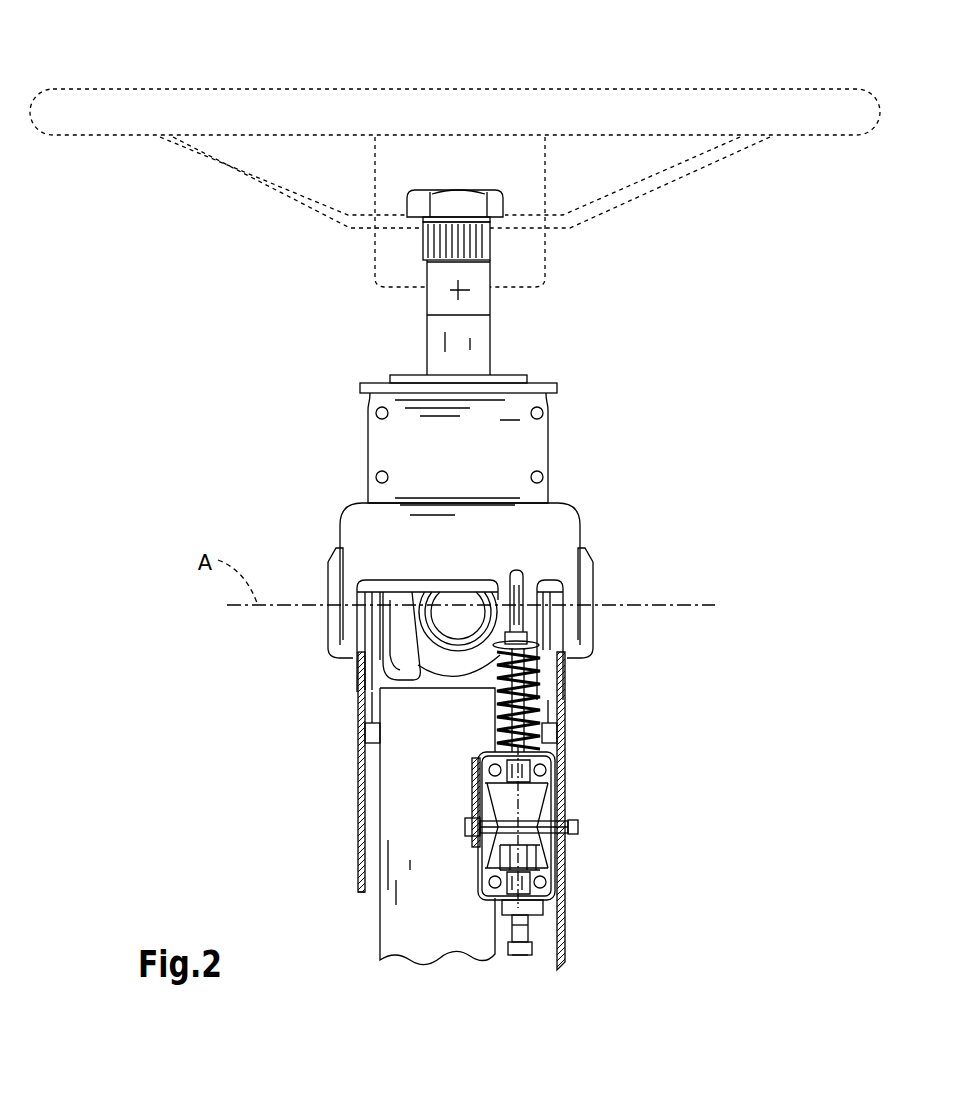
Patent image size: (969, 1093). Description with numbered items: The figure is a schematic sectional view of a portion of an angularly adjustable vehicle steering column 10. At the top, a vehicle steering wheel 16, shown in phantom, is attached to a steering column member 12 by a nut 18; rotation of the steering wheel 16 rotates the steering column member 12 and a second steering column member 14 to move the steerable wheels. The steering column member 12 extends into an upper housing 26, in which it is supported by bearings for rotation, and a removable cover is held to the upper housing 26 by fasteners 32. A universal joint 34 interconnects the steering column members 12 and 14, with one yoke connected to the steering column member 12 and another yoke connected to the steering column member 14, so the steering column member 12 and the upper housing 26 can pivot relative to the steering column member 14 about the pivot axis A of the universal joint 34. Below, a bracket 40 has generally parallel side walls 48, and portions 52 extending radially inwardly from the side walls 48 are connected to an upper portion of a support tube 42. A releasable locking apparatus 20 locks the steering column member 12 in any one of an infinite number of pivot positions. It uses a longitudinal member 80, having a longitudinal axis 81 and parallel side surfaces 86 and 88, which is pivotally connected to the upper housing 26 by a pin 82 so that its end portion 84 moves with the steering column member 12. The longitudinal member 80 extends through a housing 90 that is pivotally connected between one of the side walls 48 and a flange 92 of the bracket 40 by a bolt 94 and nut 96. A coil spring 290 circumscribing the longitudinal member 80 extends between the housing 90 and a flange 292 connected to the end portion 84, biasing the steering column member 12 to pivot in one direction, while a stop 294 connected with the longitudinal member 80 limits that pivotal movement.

The steering column 10 is at (662, 450).
The steering column member 12 is at (478, 345).
The steering column member 14 is at (428, 681).
The steering wheel 16 is at (118, 115).
The nut 18 is at (467, 190).
The locking apparatus 20 is at (657, 757).
The upper housing 26 is at (367, 533).
The fasteners 32 is at (545, 477).
The universal joint 34 is at (405, 660).
The bracket 40 is at (358, 852).
The support tube 42 is at (420, 935).
The side walls 48 is at (566, 860).
The portions 52 is at (553, 731).
The longitudinal member 80 is at (515, 936).
The longitudinal axis 81 is at (540, 972).
The pin 82 is at (565, 620).
The end portion 84 is at (517, 602).
The side surface 86 is at (530, 934).
The side surface 88 is at (513, 927).
The housing 90 is at (478, 775).
The flange 92 is at (474, 788).
The bolt 94 is at (466, 827).
The nut 96 is at (577, 826).
The coil spring 290 is at (541, 698).
The flange 292 is at (537, 646).
The stop 294 is at (515, 955).